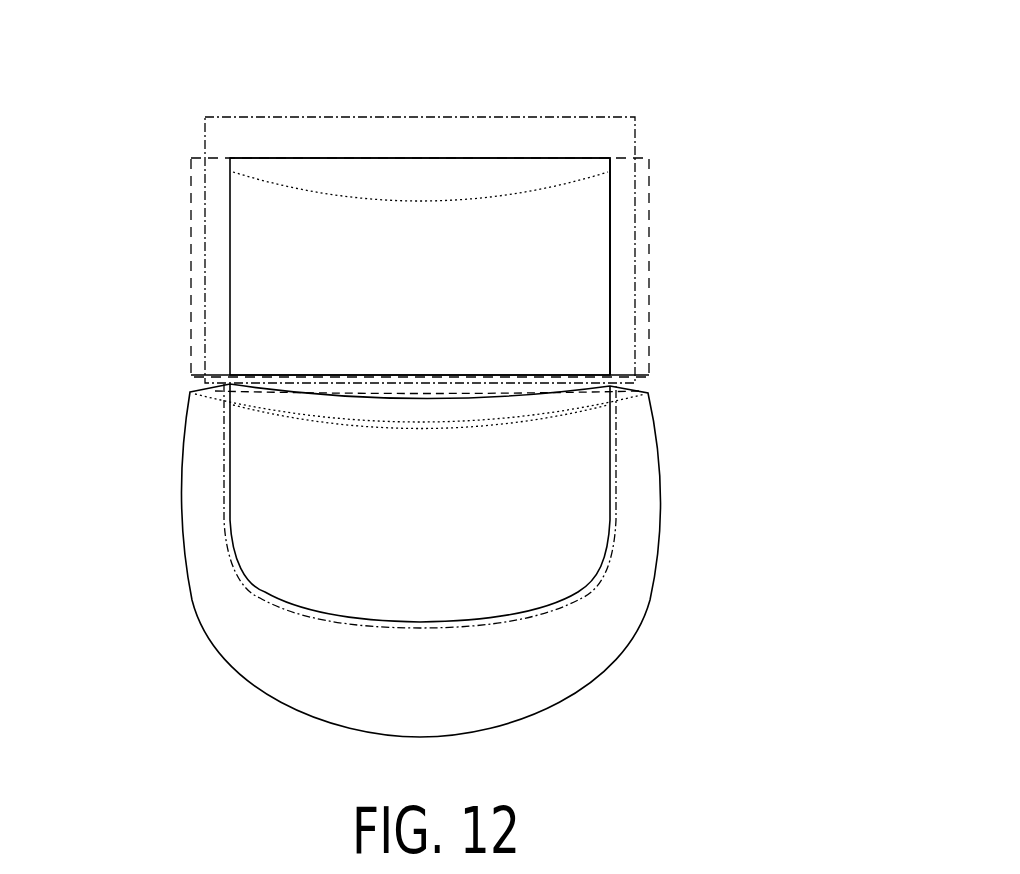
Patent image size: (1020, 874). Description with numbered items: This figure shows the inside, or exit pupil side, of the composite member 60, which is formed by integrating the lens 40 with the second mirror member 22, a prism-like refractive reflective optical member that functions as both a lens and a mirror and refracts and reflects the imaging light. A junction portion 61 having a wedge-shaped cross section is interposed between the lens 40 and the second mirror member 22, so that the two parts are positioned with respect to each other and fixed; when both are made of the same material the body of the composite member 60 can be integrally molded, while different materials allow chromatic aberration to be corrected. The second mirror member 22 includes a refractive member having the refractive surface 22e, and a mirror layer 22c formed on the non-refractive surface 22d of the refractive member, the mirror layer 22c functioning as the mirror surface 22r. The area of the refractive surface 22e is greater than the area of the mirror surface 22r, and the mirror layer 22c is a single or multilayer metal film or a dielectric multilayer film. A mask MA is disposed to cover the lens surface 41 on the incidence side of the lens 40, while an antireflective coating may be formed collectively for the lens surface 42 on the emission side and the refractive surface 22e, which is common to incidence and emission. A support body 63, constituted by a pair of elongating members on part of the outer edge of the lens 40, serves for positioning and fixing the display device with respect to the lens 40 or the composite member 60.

The mask MA is at (435, 115).
The composite member 60 is at (619, 146).
The support body 63 is at (190, 195).
The lens 40 is at (622, 282).
The lens surface 41 is at (300, 285).
The junction portion 61 is at (298, 380).
The lens surface 42 is at (600, 333).
The mirror surface 22r is at (613, 495).
The mirror layer 22c is at (328, 518).
The non-refractive surface 22d is at (345, 486).
The refractive surface 22e is at (615, 572).
The second mirror member 22 is at (652, 631).